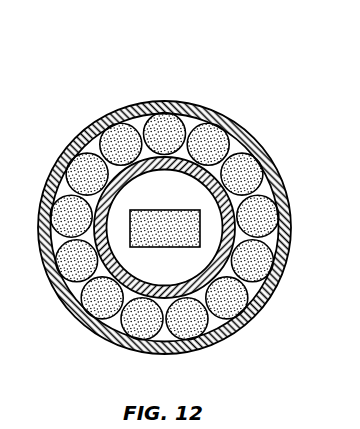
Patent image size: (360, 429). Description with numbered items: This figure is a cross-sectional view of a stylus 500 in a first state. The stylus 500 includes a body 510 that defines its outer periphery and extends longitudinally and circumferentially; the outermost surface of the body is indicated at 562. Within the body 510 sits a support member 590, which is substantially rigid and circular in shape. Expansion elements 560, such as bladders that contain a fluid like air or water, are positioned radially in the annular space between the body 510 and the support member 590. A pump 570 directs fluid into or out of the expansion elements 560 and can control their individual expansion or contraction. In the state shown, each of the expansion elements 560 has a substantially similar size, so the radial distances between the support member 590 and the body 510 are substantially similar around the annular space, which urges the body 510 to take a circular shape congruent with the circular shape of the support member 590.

The stylus 500 is at (67, 70).
The body 510 is at (50, 163).
The expansion elements 560 is at (218, 124).
The outer surface 562 is at (290, 213).
The pump 570 is at (162, 208).
The support member 590 is at (120, 316).